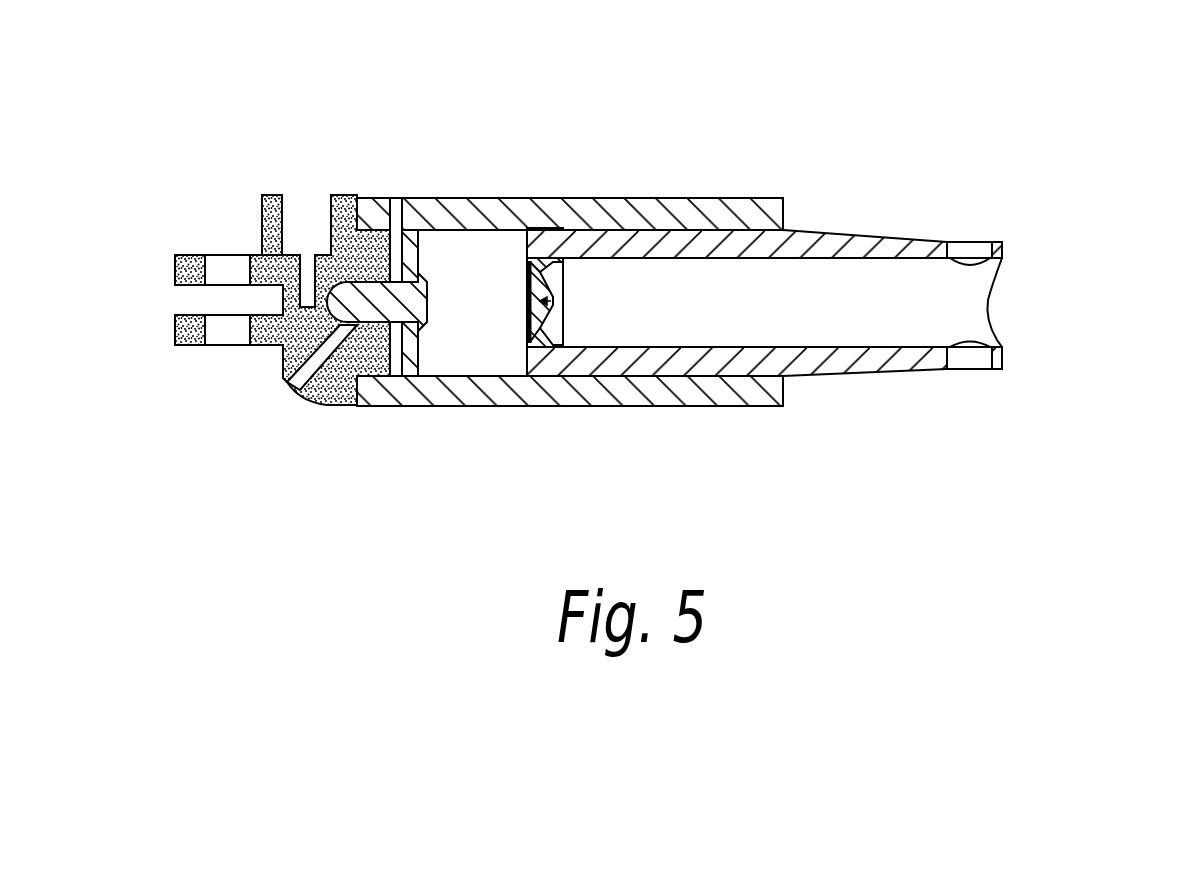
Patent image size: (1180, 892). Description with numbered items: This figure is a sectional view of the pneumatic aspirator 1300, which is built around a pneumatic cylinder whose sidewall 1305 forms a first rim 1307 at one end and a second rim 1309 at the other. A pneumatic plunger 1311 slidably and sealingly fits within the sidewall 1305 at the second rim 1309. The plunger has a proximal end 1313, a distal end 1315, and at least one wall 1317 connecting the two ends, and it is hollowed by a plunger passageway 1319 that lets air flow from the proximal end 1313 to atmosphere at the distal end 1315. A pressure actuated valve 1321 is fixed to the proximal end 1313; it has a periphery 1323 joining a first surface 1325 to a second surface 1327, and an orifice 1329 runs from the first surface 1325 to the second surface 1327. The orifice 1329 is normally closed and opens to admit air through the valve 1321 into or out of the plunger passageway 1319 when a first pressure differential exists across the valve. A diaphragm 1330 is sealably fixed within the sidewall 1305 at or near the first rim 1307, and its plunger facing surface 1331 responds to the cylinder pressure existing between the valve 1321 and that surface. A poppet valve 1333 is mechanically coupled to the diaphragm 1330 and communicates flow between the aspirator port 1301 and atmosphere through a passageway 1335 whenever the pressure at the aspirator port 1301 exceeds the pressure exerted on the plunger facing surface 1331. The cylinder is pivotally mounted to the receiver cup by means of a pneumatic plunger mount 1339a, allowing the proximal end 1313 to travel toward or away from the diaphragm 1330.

The pneumatic aspirator 1300 is at (641, 136).
The aspirator port 1301 is at (297, 210).
The sidewall 1305 is at (503, 227).
The first rim 1307 is at (348, 205).
The second rim 1309 is at (784, 408).
The pneumatic plunger 1311 is at (821, 246).
The proximal end 1313 is at (527, 350).
The distal end 1315 is at (1003, 360).
The wall 1317 is at (890, 358).
The plunger passageway 1319 is at (962, 298).
The pressure actuated valve 1321 is at (525, 309).
The periphery 1323 is at (480, 377).
The first surface 1325 is at (528, 272).
The second surface 1327 is at (557, 280).
The orifice 1329 is at (557, 313).
The diaphragm 1330 is at (418, 248).
The plunger facing surface 1331 is at (420, 361).
The poppet valve 1333 is at (393, 303).
The passageway 1335 is at (297, 380).
The pneumatic plunger mount 1339a is at (187, 255).